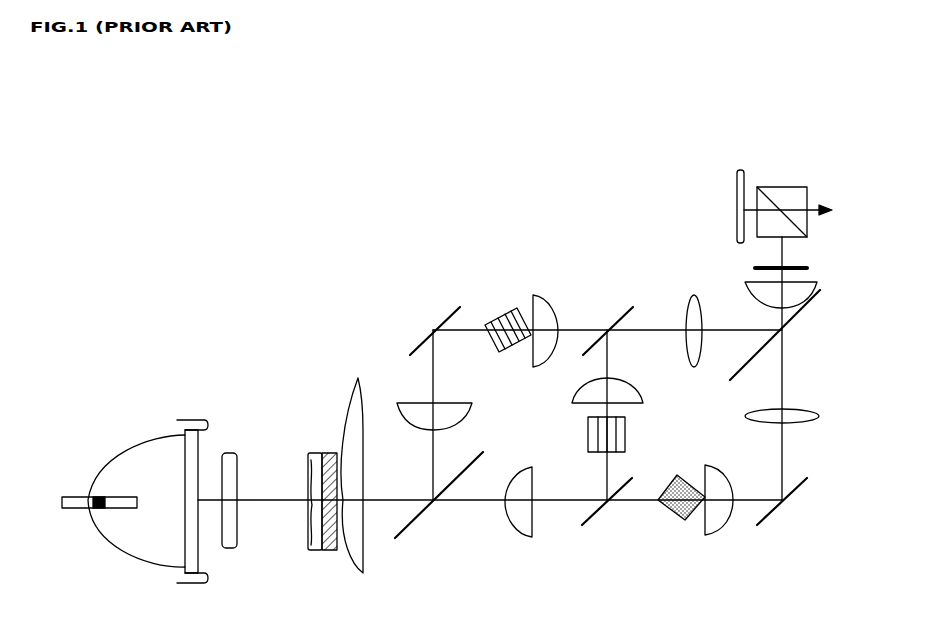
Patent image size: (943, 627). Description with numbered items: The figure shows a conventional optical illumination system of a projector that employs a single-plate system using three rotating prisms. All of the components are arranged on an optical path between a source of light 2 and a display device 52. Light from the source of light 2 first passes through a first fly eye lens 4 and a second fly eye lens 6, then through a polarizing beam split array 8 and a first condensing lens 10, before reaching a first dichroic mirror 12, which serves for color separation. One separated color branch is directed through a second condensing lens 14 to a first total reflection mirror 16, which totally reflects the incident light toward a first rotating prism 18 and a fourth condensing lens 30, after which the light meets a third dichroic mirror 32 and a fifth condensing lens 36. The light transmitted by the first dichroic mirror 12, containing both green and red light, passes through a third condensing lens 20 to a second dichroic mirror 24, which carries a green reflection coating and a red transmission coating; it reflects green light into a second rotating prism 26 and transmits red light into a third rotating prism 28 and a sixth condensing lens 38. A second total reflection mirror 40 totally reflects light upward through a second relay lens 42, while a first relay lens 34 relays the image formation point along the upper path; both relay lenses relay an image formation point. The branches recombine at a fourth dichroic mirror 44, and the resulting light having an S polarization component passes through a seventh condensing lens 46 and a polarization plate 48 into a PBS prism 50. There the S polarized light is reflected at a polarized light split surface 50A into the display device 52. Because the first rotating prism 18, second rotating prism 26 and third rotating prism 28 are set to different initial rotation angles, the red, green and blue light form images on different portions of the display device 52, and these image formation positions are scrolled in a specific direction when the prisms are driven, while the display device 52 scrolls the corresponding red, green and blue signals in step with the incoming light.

The source of light 2 is at (112, 437).
The first fly eye lens 4 is at (232, 453).
The second fly eye lens 6 is at (312, 453).
The polarizing beam split array 8 is at (330, 453).
The first condensing lens 10 is at (358, 380).
The first dichroic mirror 12 is at (430, 515).
The second condensing lens 14 is at (420, 430).
The first total reflection mirror 16 is at (425, 337).
The first rotating prism 18 is at (505, 310).
The third condensing lens 20 is at (525, 540).
The second dichroic mirror 24 is at (600, 508).
The second rotating prism 26 is at (625, 435).
The third rotating prism 28 is at (685, 520).
The fourth condensing lens 30 is at (552, 305).
The third dichroic mirror 32 is at (615, 320).
The first relay lens 34 is at (700, 295).
The fifth condensing lens 36 is at (625, 385).
The sixth condensing lens 38 is at (725, 525).
The second total reflection mirror 40 is at (785, 500).
The second relay lens 42 is at (795, 410).
The fourth dichroic mirror 44 is at (800, 325).
The seventh condensing lens 46 is at (820, 290).
The polarization plate 48 is at (806, 266).
The PBS prism 50 is at (806, 190).
The polarized light split surface 50A is at (806, 235).
The display device 52 is at (737, 192).